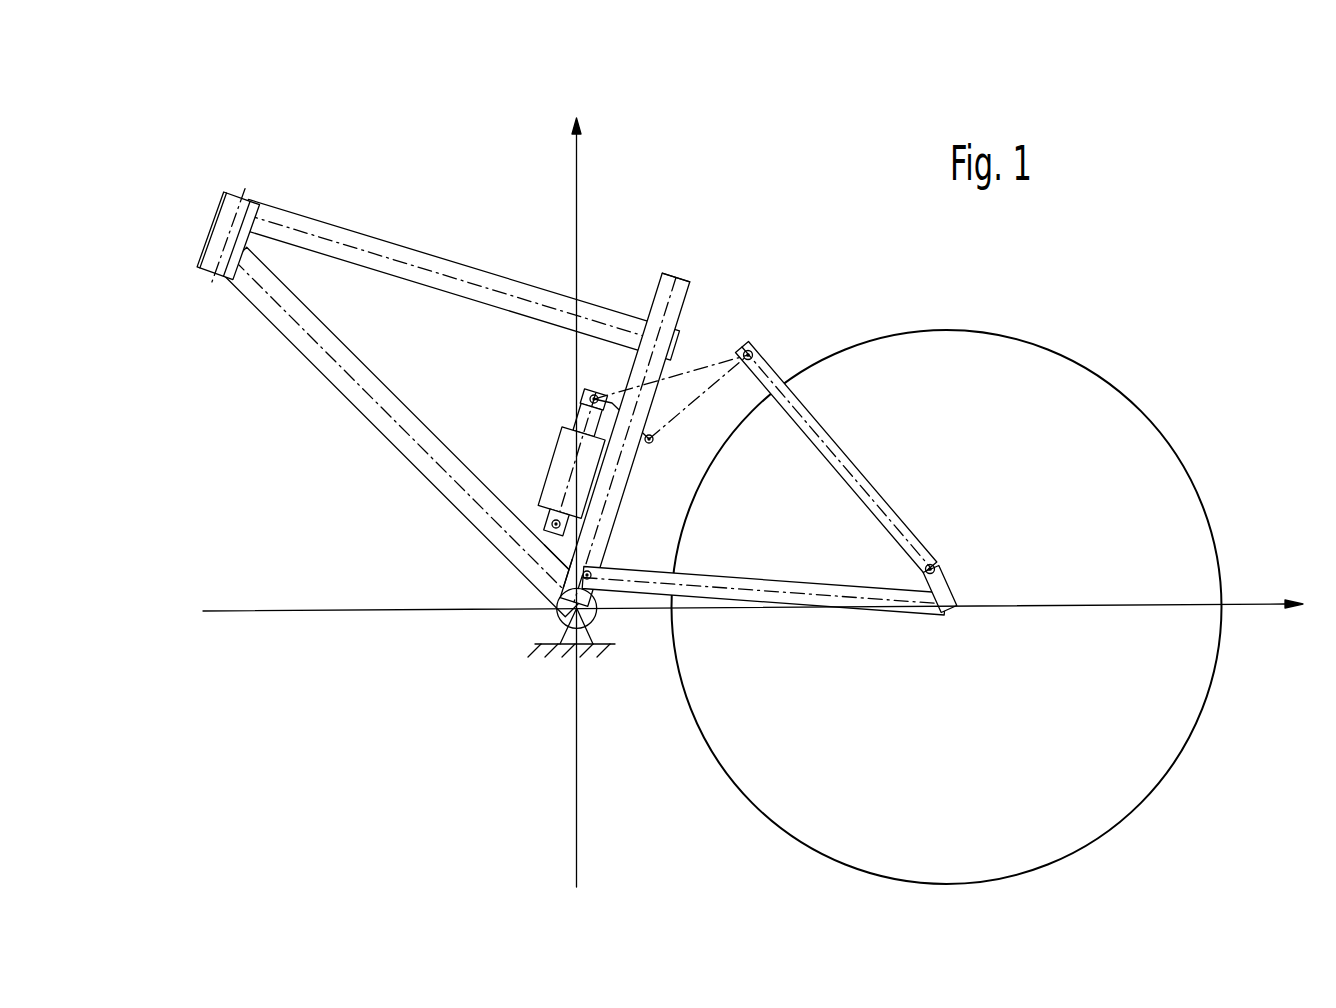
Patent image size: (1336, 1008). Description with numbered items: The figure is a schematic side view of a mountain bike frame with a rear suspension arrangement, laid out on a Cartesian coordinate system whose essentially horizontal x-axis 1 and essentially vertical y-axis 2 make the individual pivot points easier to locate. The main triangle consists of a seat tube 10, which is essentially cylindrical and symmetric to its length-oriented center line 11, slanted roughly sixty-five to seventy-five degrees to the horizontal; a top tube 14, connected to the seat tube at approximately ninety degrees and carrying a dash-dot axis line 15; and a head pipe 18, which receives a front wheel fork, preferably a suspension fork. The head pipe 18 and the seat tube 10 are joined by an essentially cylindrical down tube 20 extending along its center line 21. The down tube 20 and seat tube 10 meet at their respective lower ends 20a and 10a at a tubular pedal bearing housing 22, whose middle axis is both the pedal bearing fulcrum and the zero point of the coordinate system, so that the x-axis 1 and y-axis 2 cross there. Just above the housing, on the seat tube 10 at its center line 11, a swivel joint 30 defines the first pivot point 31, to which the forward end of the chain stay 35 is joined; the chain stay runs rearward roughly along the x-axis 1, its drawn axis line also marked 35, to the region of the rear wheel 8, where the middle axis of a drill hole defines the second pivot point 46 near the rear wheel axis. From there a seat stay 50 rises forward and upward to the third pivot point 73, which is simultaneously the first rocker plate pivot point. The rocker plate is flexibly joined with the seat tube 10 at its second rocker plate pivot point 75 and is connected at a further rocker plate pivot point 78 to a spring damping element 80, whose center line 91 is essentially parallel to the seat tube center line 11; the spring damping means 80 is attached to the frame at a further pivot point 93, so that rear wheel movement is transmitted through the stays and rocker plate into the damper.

The x-axis 1 is at (1240, 607).
The y-axis 2 is at (578, 192).
The rear wheel 8 is at (1198, 489).
The seat tube 10 is at (661, 286).
The lower end of seat tube 10a is at (600, 597).
The center line of seat tube 11 is at (682, 308).
The top tube 14 is at (388, 246).
The top tube axis 15 is at (322, 226).
The head pipe 18 is at (210, 236).
The down tube 20 is at (328, 384).
The lower end of down tube 20a is at (537, 584).
The center line of down tube 21 is at (280, 312).
The pedal bearing housing 22 is at (556, 657).
The swivel joint 30 is at (655, 572).
The first pivot point 31 is at (602, 566).
The chain stay 35 is at (735, 598).
The second pivot point 46 is at (938, 562).
The seat stay 50 is at (862, 470).
The third pivot point 73 is at (756, 348).
The second rocker plate pivot point 75 is at (652, 446).
The rocker plate pivot point 78 is at (588, 396).
The spring damping element 80 is at (563, 432).
The center line of spring damping means 91 is at (565, 456).
The further pivot point 93 is at (552, 512).